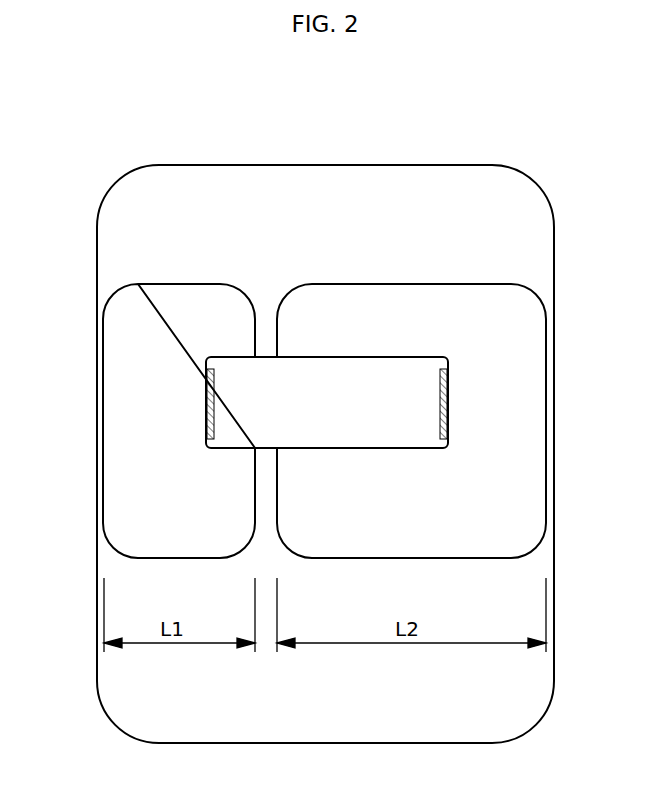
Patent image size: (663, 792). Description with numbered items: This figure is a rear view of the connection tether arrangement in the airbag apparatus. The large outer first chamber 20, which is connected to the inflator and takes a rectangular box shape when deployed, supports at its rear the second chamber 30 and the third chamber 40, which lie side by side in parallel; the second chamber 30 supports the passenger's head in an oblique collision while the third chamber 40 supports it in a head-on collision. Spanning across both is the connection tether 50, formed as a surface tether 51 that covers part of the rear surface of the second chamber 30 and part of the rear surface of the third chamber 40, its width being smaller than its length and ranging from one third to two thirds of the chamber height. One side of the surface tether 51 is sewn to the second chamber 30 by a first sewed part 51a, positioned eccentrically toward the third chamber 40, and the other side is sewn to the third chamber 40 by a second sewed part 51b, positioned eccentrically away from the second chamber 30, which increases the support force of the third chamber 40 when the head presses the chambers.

The first chamber 20 is at (545, 195).
The second chamber 30 is at (141, 490).
The third chamber 40 is at (507, 480).
The connection tether 50 is at (367, 357).
The surface tether 51 is at (399, 373).
The first sewed part 51a is at (207, 400).
The second sewed part 51b is at (448, 400).